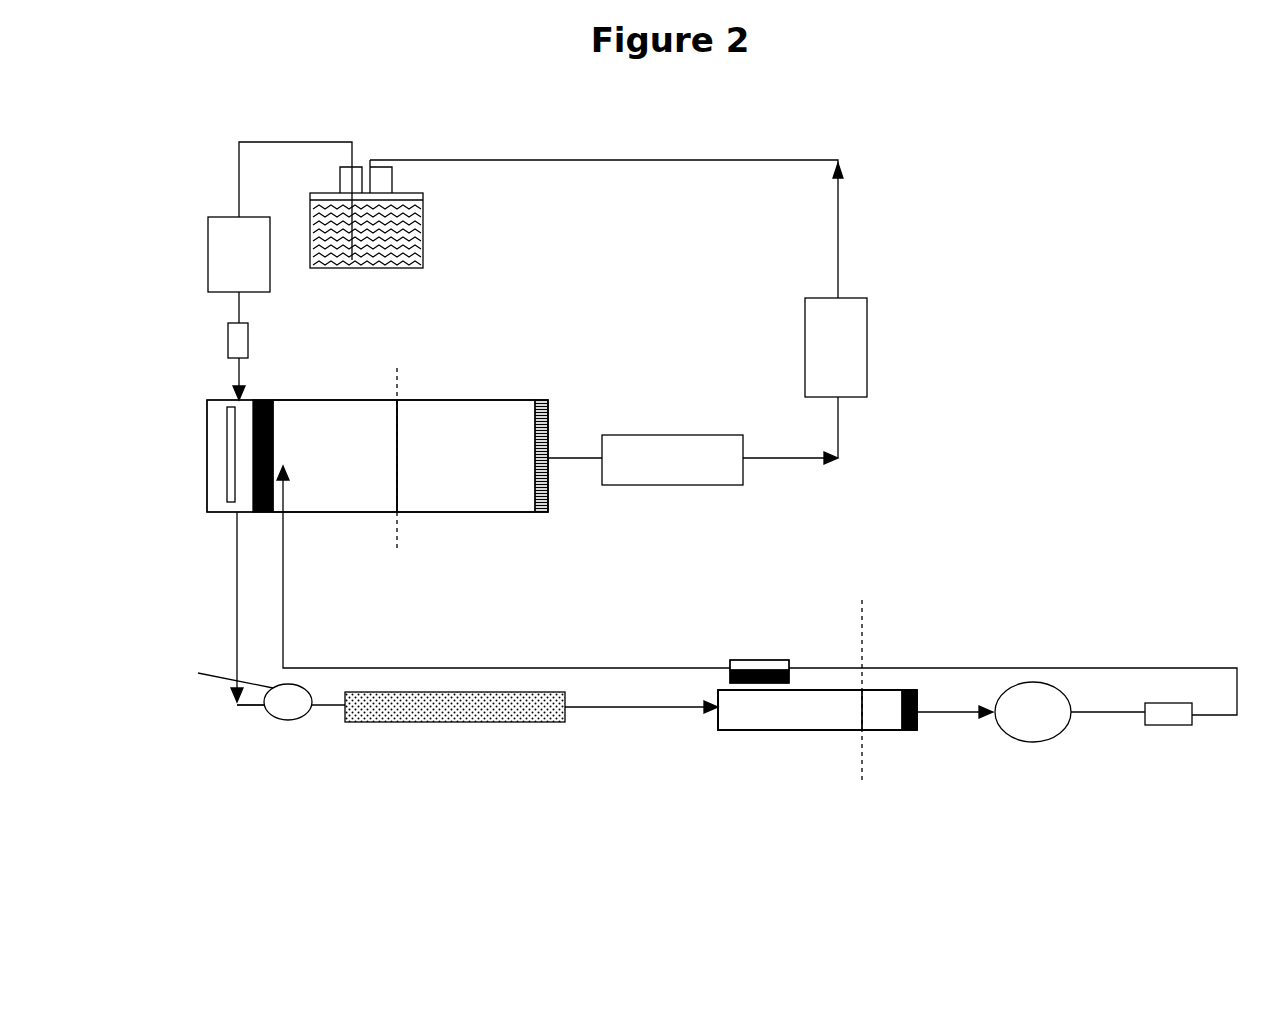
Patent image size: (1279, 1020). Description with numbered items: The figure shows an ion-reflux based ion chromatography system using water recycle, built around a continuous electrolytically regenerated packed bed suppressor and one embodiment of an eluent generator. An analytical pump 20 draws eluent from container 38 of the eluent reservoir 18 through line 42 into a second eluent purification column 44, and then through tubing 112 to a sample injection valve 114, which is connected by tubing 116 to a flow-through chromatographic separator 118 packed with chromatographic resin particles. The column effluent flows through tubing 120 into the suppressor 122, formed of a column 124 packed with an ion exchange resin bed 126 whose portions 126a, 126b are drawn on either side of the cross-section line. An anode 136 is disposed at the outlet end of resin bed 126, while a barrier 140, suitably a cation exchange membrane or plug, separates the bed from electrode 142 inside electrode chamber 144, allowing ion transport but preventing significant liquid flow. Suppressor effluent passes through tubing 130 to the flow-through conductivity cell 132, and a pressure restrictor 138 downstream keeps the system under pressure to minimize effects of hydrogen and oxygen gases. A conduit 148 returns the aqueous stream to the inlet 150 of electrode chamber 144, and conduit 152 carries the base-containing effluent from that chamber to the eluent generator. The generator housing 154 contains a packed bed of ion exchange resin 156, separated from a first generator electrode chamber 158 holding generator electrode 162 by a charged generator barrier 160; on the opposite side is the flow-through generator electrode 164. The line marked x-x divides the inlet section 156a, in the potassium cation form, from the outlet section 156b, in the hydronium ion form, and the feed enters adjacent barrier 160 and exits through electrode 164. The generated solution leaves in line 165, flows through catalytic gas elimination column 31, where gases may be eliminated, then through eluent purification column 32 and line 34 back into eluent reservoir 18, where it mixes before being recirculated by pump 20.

The eluent reservoir 18 is at (422, 213).
The pump 20 is at (230, 245).
The catalytic gas elimination column 31 is at (662, 487).
The eluent purification column 32 is at (868, 300).
The line 34 is at (730, 160).
The container 38 is at (428, 250).
The line 42 is at (267, 140).
The second eluent purification column 44 is at (252, 345).
The tubing 112 is at (235, 550).
The sample injection valve 114 is at (268, 718).
The tubing 116 is at (333, 713).
The chromatographic separator 118 is at (402, 725).
The tubing 120 is at (680, 698).
The suppressor 122 is at (800, 730).
The column 124 is at (883, 717).
The ion exchange resin bed 126 is at (812, 710).
The membrane first portion 126a is at (740, 722).
The membrane second portion 126b is at (913, 690).
The tubing 130 is at (935, 712).
The conductivity cell 132 is at (1040, 675).
The anode 136 is at (905, 690).
The pressure restrictor 138 is at (1165, 700).
The barrier 140 is at (706, 695).
The electrode 142 is at (730, 660).
The electrode chamber 144 is at (768, 660).
The conduit 148 is at (1105, 665).
The inlet 150 is at (793, 662).
The conduit 152 is at (480, 665).
The housing 154 is at (425, 395).
The packed bed of ion exchange resin 156 is at (385, 520).
The inlet section 156a is at (372, 507).
The outlet section 156b is at (522, 510).
The first generator electrode chamber 158 is at (216, 478).
The charged generator barrier 160 is at (265, 396).
The generator electrode 162 is at (226, 437).
The flow-through generator electrode 164 is at (550, 395).
The line 165 is at (812, 463).